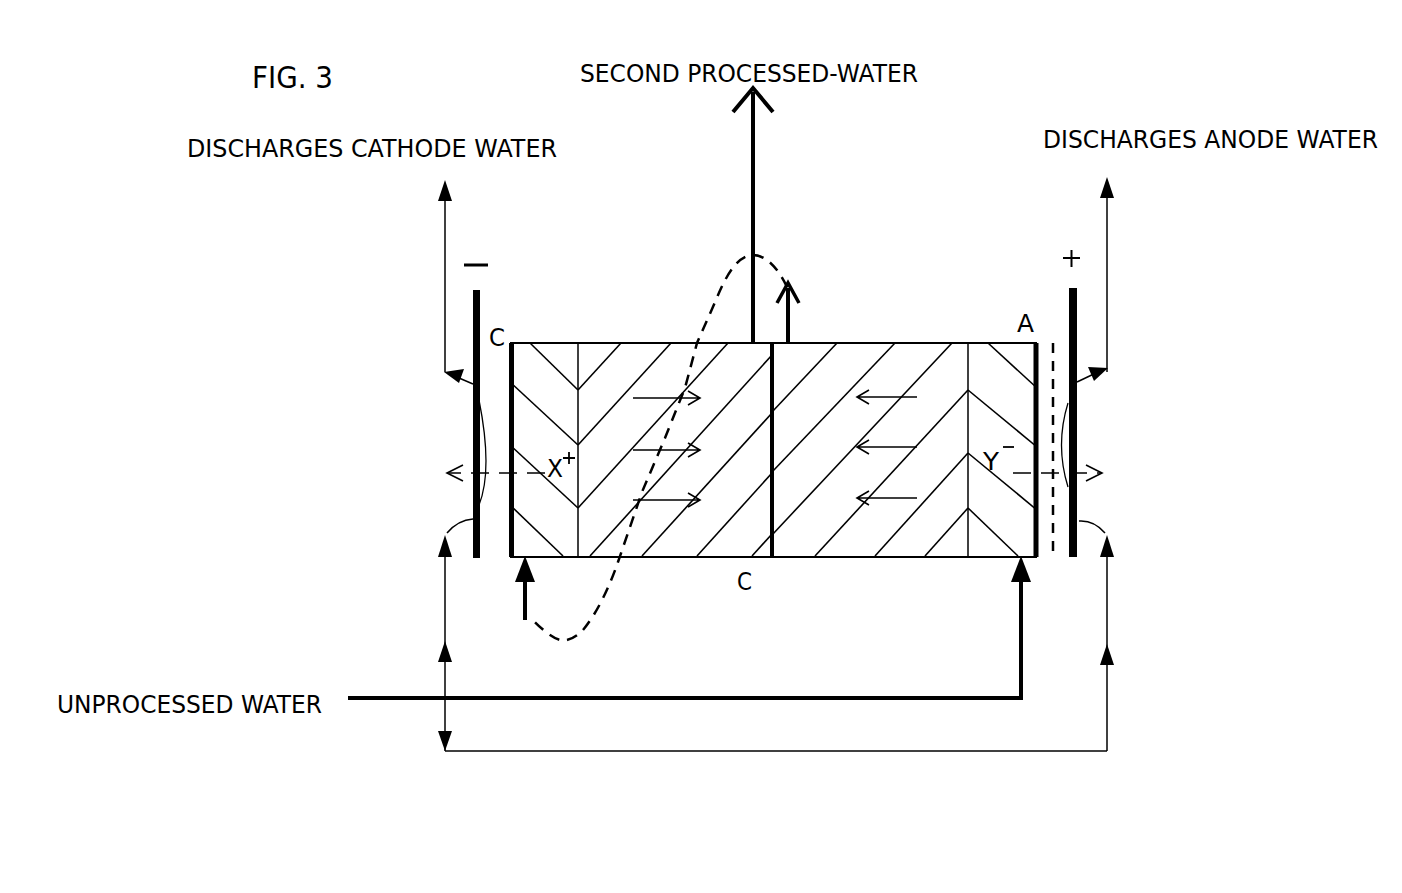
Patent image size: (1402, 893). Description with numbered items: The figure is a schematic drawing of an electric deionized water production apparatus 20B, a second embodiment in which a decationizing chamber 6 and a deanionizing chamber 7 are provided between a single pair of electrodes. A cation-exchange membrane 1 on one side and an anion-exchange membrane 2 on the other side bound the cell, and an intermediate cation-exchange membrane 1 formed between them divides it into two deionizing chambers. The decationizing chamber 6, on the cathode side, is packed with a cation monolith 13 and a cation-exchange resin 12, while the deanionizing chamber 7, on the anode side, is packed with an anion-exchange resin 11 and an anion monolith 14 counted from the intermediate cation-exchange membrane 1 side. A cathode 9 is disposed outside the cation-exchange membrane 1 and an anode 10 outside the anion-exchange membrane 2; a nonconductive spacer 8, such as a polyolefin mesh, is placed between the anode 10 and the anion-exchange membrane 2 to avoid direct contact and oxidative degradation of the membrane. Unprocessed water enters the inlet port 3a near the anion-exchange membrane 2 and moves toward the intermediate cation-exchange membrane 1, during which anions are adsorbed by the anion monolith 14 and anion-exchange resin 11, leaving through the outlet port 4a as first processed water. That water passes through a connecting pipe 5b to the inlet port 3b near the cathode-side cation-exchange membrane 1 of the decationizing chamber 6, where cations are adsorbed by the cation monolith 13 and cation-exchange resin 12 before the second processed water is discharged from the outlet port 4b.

The cation-exchange membrane 1 is at (514, 340).
The anion-exchange membrane 2 is at (1040, 560).
The inlet port 3a is at (1012, 560).
The inlet port 3b is at (523, 560).
The outlet port 4a is at (797, 338).
The outlet port 4b is at (743, 337).
The connecting pipe 5b is at (560, 640).
The decationizing chamber 6 is at (680, 559).
The deanionizing chamber 7 is at (940, 560).
The nonconductive spacer 8 is at (1053, 338).
The cathode 9 is at (472, 452).
The anode 10 is at (1082, 432).
The anion-exchange resin 11 is at (907, 343).
The cation-exchange resin 12 is at (629, 357).
The cation monolith 13 is at (558, 357).
The anion monolith 14 is at (1000, 343).
The electric deionized water production apparatus 20B is at (1020, 174).